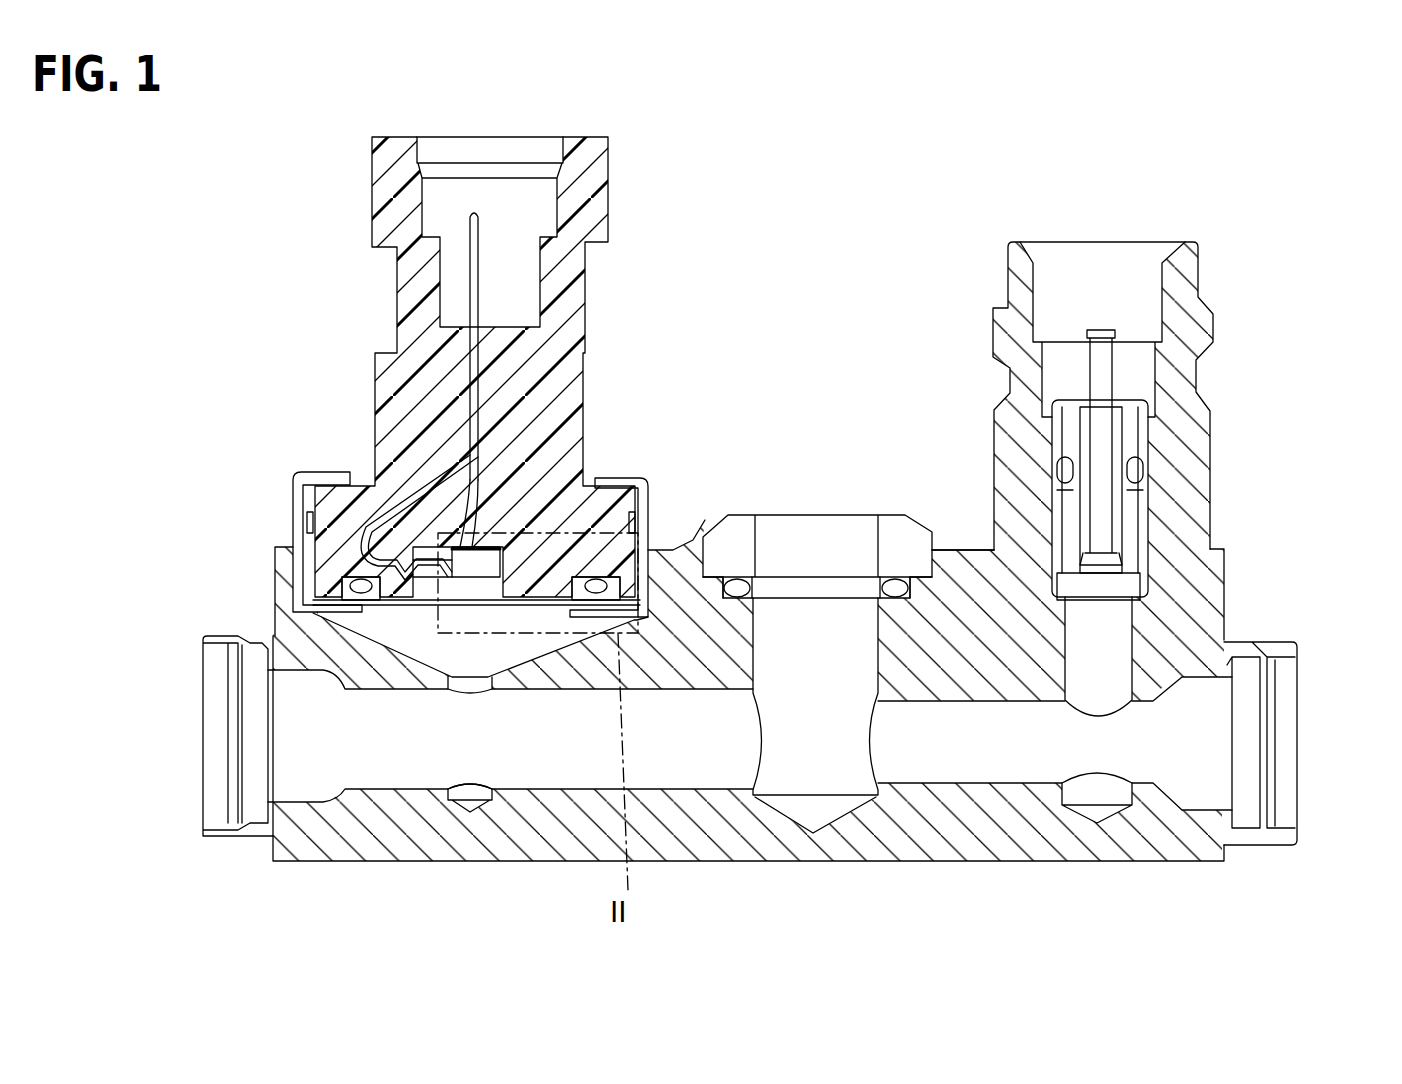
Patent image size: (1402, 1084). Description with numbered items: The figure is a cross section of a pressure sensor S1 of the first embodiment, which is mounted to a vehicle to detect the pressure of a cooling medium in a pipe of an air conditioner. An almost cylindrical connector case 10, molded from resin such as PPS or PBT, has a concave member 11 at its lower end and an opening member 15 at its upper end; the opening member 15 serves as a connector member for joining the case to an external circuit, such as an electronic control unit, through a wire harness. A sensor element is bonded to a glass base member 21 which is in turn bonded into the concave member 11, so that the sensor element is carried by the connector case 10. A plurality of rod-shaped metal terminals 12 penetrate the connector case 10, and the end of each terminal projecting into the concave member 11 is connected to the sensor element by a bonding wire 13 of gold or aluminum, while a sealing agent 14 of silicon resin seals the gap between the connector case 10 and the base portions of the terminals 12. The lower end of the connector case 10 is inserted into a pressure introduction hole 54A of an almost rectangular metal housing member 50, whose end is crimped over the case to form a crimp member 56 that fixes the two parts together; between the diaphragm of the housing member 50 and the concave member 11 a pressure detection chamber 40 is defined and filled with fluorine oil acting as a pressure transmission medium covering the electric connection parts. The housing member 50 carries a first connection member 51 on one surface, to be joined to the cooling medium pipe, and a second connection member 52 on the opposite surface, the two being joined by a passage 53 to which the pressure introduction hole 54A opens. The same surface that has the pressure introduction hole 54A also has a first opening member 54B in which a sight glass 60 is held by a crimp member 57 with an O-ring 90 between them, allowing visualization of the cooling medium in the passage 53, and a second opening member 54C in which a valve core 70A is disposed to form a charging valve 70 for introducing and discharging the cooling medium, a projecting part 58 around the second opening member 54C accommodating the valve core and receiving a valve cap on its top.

The connector case 10 is at (496, 327).
The concave member 11 is at (476, 545).
The terminals 12 is at (470, 273).
The bonding wire 13 is at (397, 613).
The sealing agent 14 is at (350, 590).
The opening member 15 is at (553, 137).
The base member 21 is at (486, 545).
The pressure detection chamber 40 is at (387, 613).
The housing member 50 is at (739, 603).
The first connection member 51 is at (260, 633).
The second connection member 52 is at (1247, 643).
The passage 53 is at (563, 748).
The pressure introduction hole 54A is at (470, 640).
The first opening member 54B is at (767, 643).
The second opening member 54C is at (1143, 475).
The crimp member 56 is at (620, 476).
The crimp member 57 is at (950, 550).
The projecting part 58 is at (1212, 516).
The sight glass 60 is at (838, 513).
The charging valve 70 is at (1169, 525).
The valve core 70A is at (1127, 396).
The O-ring 90 is at (897, 600).
The pressure sensor S1 is at (539, 511).